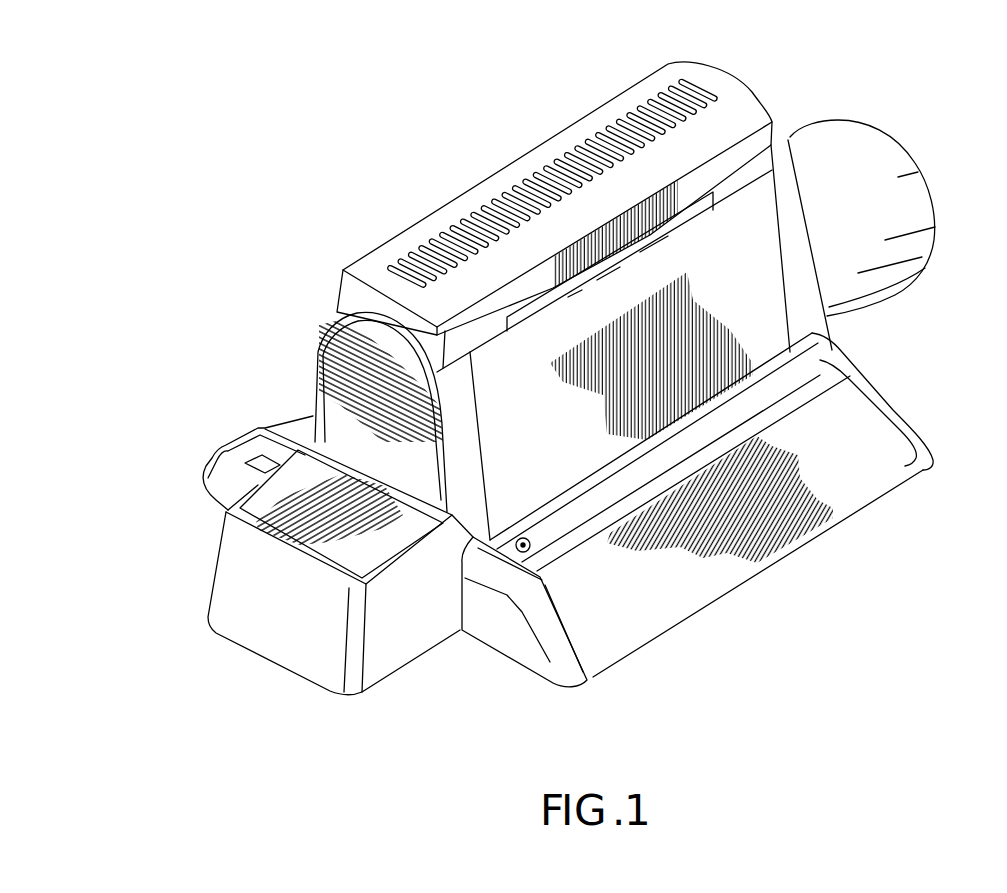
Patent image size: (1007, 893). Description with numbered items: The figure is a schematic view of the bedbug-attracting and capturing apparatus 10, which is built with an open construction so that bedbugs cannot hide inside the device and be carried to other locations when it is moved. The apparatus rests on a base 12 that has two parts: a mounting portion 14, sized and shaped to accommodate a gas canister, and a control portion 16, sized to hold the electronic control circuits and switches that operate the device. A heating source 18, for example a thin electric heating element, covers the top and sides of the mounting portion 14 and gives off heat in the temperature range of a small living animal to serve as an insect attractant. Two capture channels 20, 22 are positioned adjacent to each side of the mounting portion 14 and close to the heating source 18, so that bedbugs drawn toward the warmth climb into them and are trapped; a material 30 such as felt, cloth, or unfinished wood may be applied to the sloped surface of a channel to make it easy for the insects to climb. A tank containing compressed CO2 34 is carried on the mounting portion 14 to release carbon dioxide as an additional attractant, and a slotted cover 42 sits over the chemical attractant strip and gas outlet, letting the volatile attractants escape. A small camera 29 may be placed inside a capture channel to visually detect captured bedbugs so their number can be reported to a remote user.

The apparatus 10 is at (274, 121).
The base 12 is at (830, 325).
The mounting portion 14 is at (320, 336).
The control portion 16 is at (370, 693).
The heating source 18 is at (753, 210).
The capture channel 20 is at (512, 663).
The capture channel 22 is at (208, 500).
The camera 29 is at (530, 536).
The material 30 is at (860, 513).
The tank containing compressed CO2 34 is at (930, 182).
The cover 42 is at (704, 80).